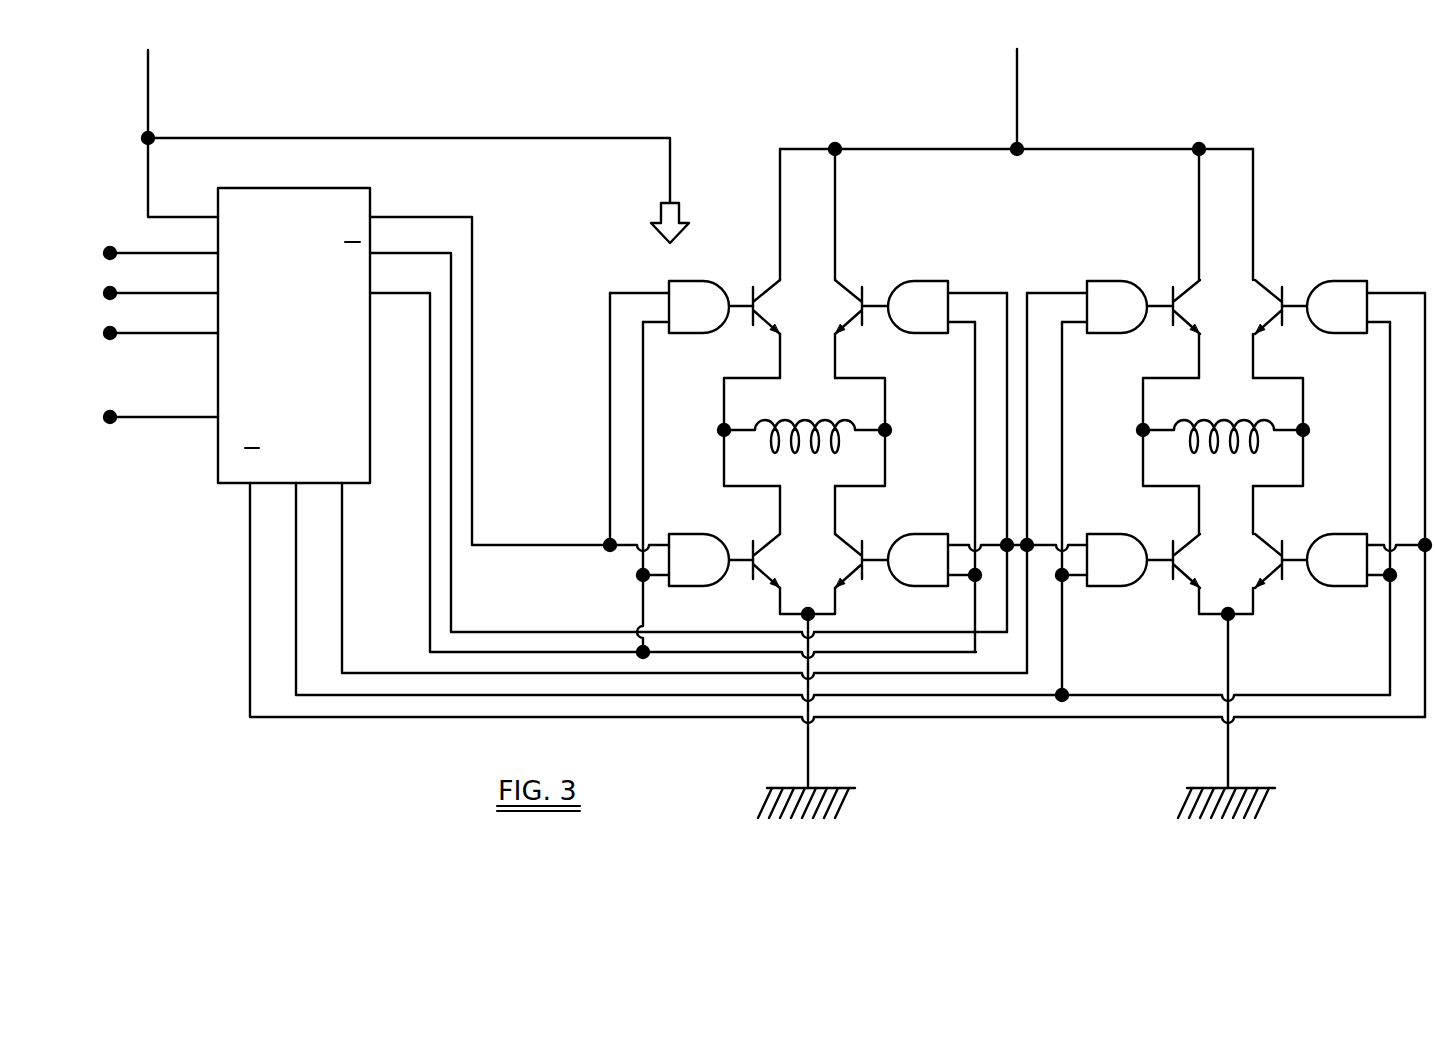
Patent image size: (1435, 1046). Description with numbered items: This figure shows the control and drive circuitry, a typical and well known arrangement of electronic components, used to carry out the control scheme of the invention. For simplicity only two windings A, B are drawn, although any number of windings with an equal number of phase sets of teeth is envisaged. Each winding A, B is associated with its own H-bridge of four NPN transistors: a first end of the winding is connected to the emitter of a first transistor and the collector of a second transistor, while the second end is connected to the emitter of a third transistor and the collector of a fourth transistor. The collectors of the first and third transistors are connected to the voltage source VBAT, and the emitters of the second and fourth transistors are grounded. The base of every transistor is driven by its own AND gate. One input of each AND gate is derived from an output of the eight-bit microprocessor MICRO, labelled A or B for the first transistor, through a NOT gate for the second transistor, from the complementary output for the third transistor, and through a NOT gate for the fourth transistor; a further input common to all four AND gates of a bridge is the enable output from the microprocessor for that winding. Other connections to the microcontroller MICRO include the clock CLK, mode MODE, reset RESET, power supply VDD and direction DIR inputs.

The power supply input VDD is at (415, 135).
The voltage source VBAT is at (1016, 90).
The 8-bit microprocessor MICRO is at (294, 335).
The direction input DIR is at (161, 242).
The clock input CLK is at (161, 283).
The mode input MODE is at (161, 323).
The reset input RESET is at (161, 407).
The winding A is at (804, 425).
The winding B is at (1223, 425).